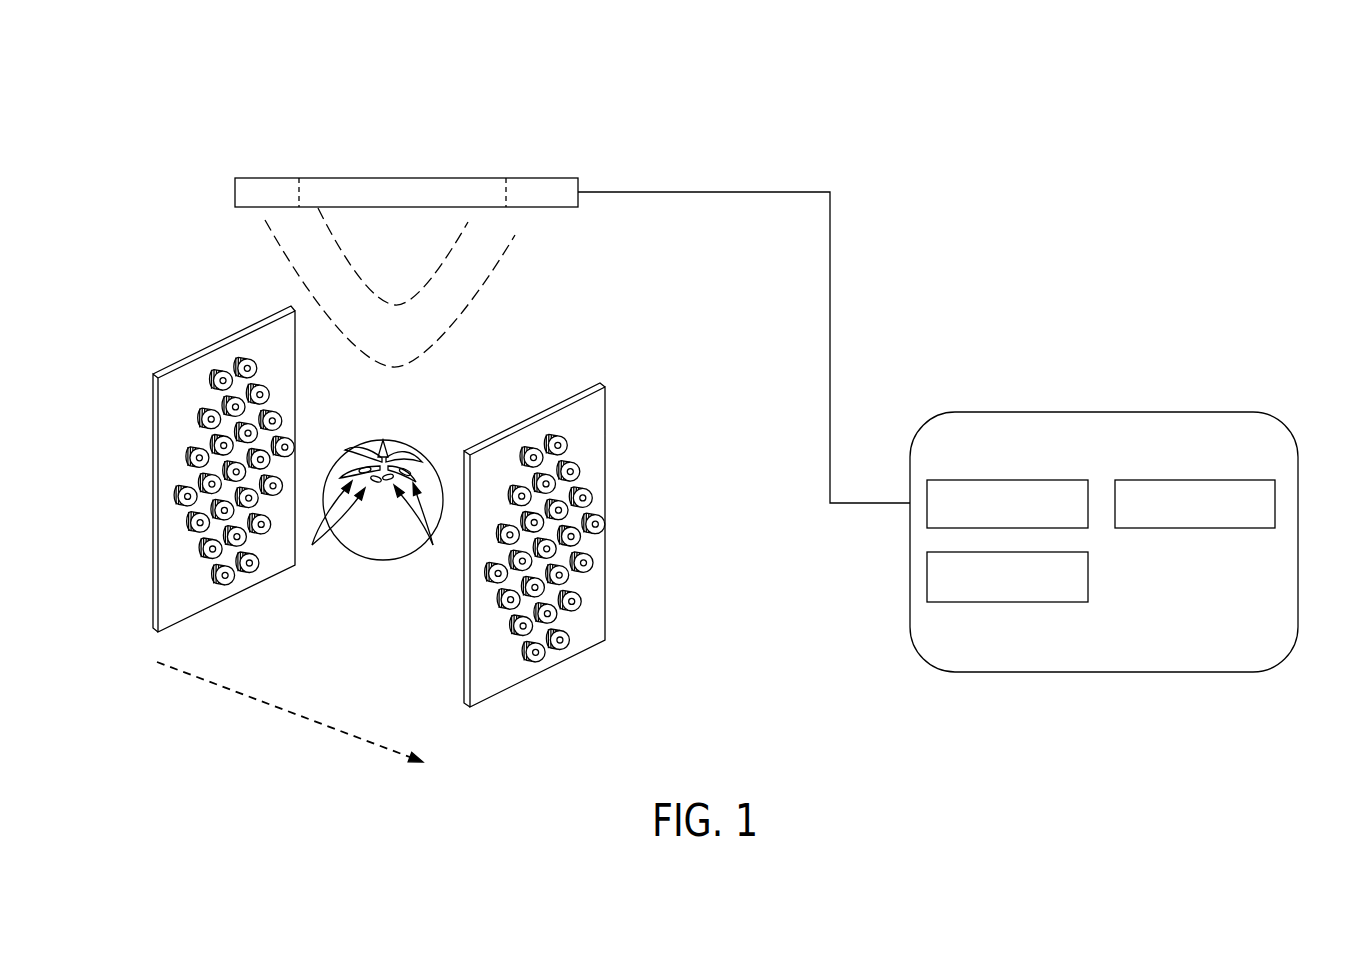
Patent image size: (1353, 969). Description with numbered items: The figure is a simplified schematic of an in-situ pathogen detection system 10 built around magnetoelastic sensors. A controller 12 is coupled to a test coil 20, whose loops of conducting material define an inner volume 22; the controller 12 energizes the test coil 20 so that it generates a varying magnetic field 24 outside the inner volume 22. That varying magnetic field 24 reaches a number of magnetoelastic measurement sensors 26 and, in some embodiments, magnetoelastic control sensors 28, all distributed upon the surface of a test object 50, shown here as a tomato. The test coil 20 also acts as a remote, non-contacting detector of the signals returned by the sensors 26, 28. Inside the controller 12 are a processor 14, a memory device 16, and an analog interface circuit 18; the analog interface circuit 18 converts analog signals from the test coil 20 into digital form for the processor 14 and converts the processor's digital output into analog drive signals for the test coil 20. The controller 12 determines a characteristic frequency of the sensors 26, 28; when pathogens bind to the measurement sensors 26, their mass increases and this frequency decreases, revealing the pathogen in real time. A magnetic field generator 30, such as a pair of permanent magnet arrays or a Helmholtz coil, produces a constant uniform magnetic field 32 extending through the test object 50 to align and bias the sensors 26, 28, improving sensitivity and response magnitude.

The in-situ pathogen detection system 10 is at (168, 115).
The controller 12 is at (1140, 412).
The processor 14 is at (975, 479).
The memory device 16 is at (1205, 479).
The analog interface circuit 18 is at (1089, 580).
The test coil 20 is at (537, 190).
The inner volume 22 is at (423, 168).
The varying magnetic field 24 is at (540, 277).
The magnetoelastic measurement sensors 26 is at (333, 530).
The magnetoelastic control sensors 28 is at (421, 531).
The magnetic field generator 30 is at (172, 577).
The uniform magnetic field 32 is at (278, 707).
The test object 50 is at (424, 463).